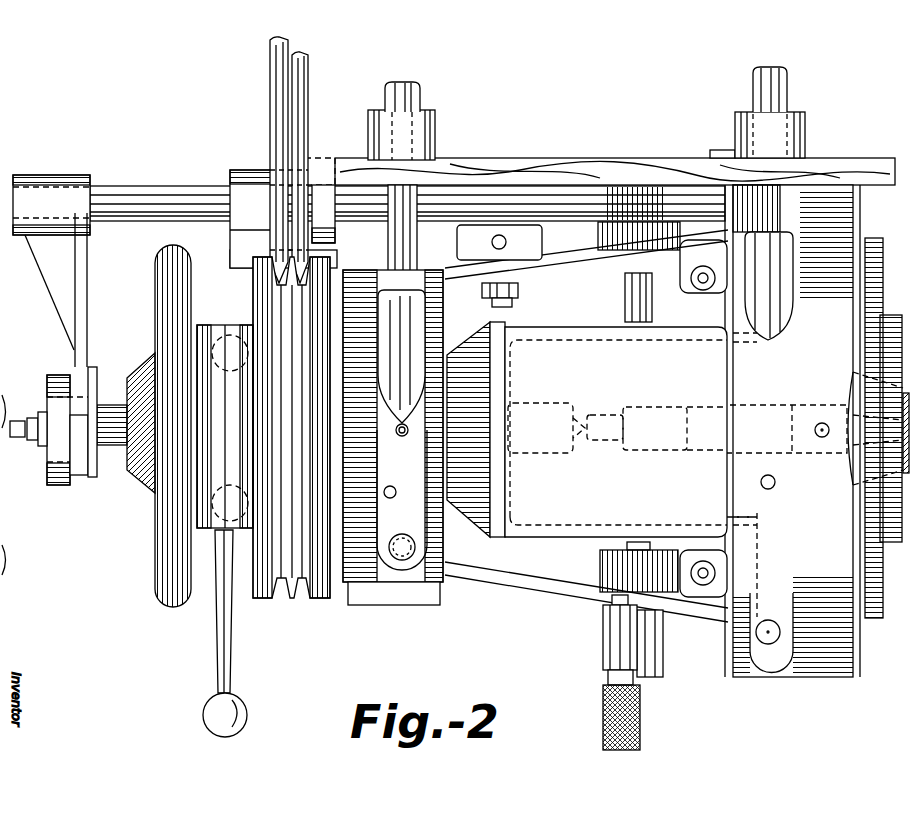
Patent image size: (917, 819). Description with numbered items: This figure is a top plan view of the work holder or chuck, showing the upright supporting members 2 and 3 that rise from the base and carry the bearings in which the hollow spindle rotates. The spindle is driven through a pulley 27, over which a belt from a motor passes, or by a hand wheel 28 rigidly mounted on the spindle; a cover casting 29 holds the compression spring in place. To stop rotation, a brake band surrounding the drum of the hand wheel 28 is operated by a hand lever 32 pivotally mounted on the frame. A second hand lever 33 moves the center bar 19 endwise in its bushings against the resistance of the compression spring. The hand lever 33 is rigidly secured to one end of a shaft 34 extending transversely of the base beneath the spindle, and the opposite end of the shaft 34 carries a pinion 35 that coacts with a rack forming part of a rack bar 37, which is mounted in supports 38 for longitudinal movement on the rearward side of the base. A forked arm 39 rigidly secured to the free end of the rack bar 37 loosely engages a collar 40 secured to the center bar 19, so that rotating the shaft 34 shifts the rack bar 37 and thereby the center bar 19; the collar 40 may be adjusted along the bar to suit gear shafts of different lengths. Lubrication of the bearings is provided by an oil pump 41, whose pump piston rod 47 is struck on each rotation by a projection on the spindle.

The upright supporting member 2 is at (845, 662).
The upright supporting member 3 is at (377, 570).
The center bar 19 is at (120, 447).
The pulley 27 is at (322, 600).
The hand wheel 28 is at (158, 563).
The cover casting 29 is at (207, 530).
The hand lever 32 is at (222, 658).
The hand lever 33 is at (641, 707).
The shaft 34 is at (627, 293).
The pinion 35 is at (667, 183).
The rack bar 37 is at (143, 193).
The support 38 is at (250, 172).
The forked arm 39 is at (82, 293).
The collar 40 is at (64, 474).
The oil pump 41 is at (520, 292).
The pump piston rod 47 is at (512, 303).